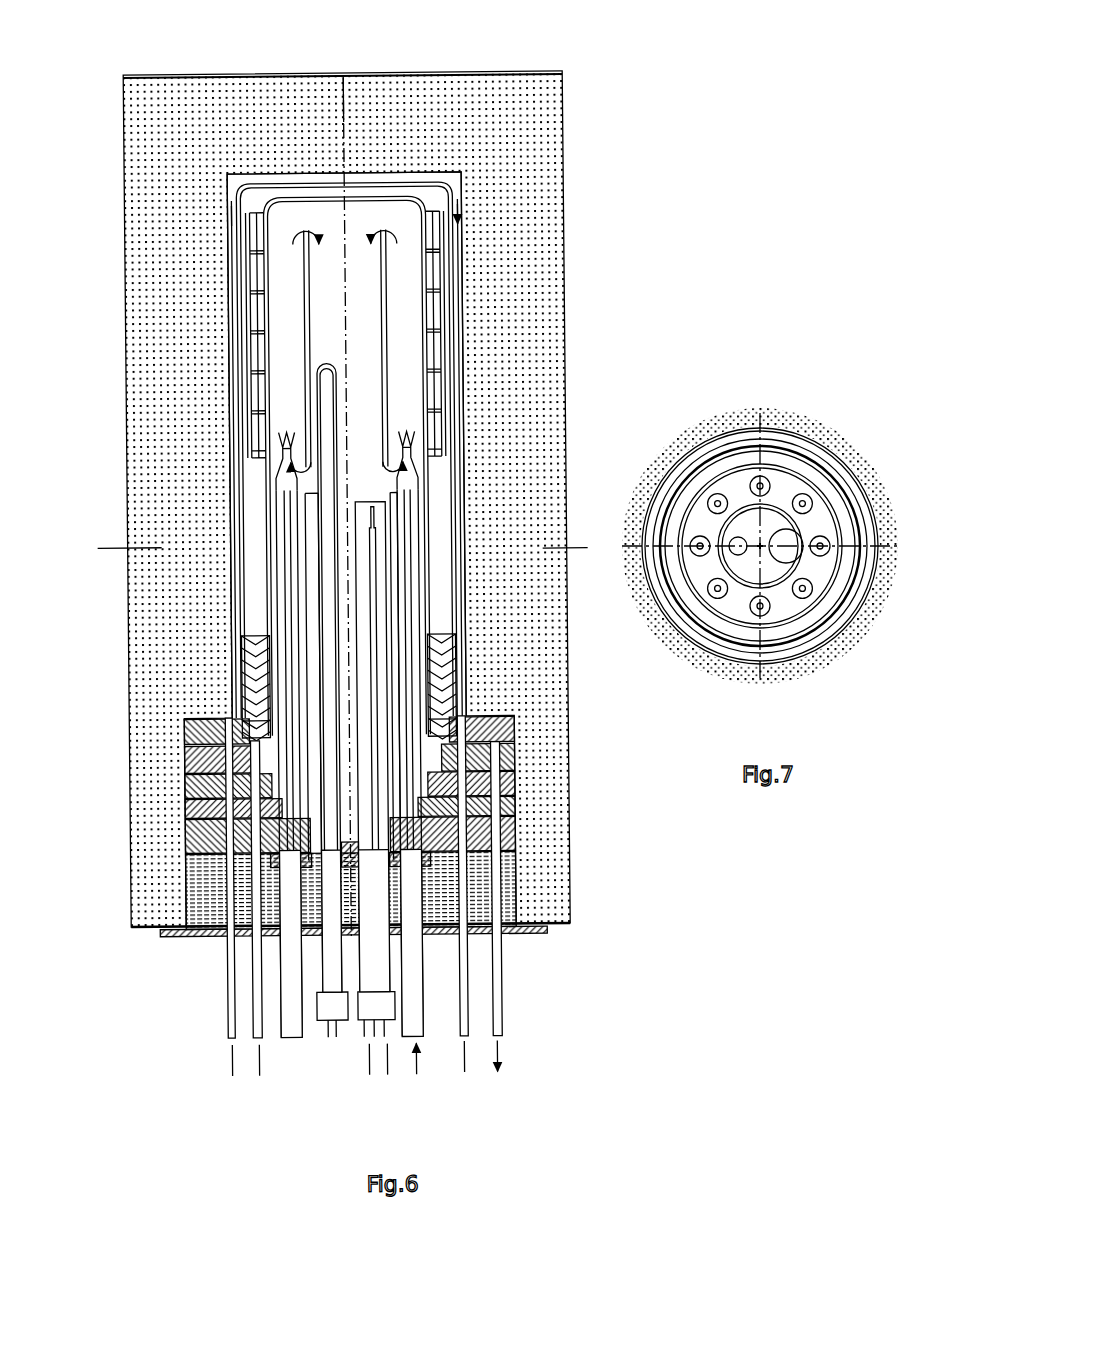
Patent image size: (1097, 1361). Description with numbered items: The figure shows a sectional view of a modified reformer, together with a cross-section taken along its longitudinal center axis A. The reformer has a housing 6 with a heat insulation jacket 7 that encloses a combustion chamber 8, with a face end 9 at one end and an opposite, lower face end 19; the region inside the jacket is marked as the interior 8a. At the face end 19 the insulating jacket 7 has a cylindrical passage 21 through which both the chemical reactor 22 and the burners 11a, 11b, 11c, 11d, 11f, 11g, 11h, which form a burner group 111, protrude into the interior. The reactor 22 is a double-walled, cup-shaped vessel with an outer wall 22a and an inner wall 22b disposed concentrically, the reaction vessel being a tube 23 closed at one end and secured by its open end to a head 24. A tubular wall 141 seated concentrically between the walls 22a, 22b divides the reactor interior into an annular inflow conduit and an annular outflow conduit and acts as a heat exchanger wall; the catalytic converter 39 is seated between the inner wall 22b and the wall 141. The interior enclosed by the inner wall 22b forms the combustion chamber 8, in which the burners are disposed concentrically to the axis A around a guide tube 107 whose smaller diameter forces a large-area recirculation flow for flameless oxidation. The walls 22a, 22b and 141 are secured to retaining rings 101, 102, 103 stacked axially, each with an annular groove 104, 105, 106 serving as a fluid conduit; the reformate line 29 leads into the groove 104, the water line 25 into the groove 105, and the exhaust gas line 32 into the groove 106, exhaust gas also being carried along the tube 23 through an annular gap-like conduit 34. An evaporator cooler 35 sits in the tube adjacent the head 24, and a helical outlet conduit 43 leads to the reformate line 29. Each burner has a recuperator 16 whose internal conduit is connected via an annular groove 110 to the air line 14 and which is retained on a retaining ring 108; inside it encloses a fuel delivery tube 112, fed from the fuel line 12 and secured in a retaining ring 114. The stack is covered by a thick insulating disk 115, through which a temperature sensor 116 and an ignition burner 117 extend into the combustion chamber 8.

In FIG. 6, the housing 6 is at (220, 260).
In FIG. 6, the heat insulation jacket 7 is at (170, 218).
In FIG. 6, the combustion chamber 8 is at (339, 350).
In FIG. 6, the inner chamber 8a is at (402, 520).
In FIG. 6, the face end 9 is at (346, 474).
In FIG. 6, the longitudinal center axis A is at (368, 64).
In FIG. 6, the burner 11a is at (457, 650).
In FIG. 7, the burner 11a is at (826, 538).
In FIG. 7, the burner 11b is at (806, 598).
In FIG. 7, the burner 11c is at (762, 617).
In FIG. 7, the burner 11d is at (717, 599).
In FIG. 7, the burner 11f is at (718, 494).
In FIG. 7, the burner 11g is at (760, 476).
In FIG. 7, the burner 11h is at (805, 494).
In FIG. 6, the fuel line 12 is at (428, 814).
In FIG. 6, the line 14 is at (247, 956).
In FIG. 6, the recuperator 16 is at (445, 761).
In FIG. 6, the face end 19 is at (346, 1000).
In FIG. 6, the passage 21 is at (165, 835).
In FIG. 6, the chemical reactor 22 is at (439, 444).
In FIG. 7, the chemical reactor 22 is at (832, 610).
In FIG. 6, the outer wall 22a is at (340, 363).
In FIG. 6, the inner wall 22b is at (346, 373).
In FIG. 7, the inner wall 22b is at (775, 470).
In FIG. 6, the tube 23 is at (466, 457).
In FIG. 6, the head 24 is at (298, 768).
In FIG. 6, the line 25 is at (196, 935).
In FIG. 6, the reformate line 29 is at (553, 887).
In FIG. 6, the exhaust gas line 32 is at (506, 913).
In FIG. 6, the annular gap-like conduit 34 is at (447, 612).
In FIG. 6, the evaporator cooler 35 is at (452, 696).
In FIG. 6, the catalytic converter 39 is at (445, 333).
In FIG. 6, the outlet conduit 43 is at (438, 684).
In FIG. 6, the retaining ring 101 is at (565, 725).
In FIG. 6, the retaining ring 102 is at (560, 759).
In FIG. 6, the retaining ring 103 is at (570, 789).
In FIG. 6, the annular groove 104 is at (143, 715).
In FIG. 6, the annular groove 105 is at (147, 754).
In FIG. 6, the annular groove 106 is at (157, 785).
In FIG. 6, the guide tube 107 is at (329, 636).
In FIG. 6, the retaining ring 108 is at (539, 811).
In FIG. 6, the annular groove 110 is at (161, 822).
In FIG. 6, the burner group 111 is at (460, 452).
In FIG. 6, the fuel delivery tube 112 is at (167, 447).
In FIG. 6, the retaining ring 114 is at (488, 862).
In FIG. 6, the insulating disk 115 is at (314, 932).
In FIG. 6, the temperature sensor 116 is at (319, 1086).
In FIG. 6, the ignition burner 117 is at (358, 821).
In FIG. 6, the tubular wall 141 is at (449, 333).
In FIG. 7, the tubular wall 141 is at (719, 475).